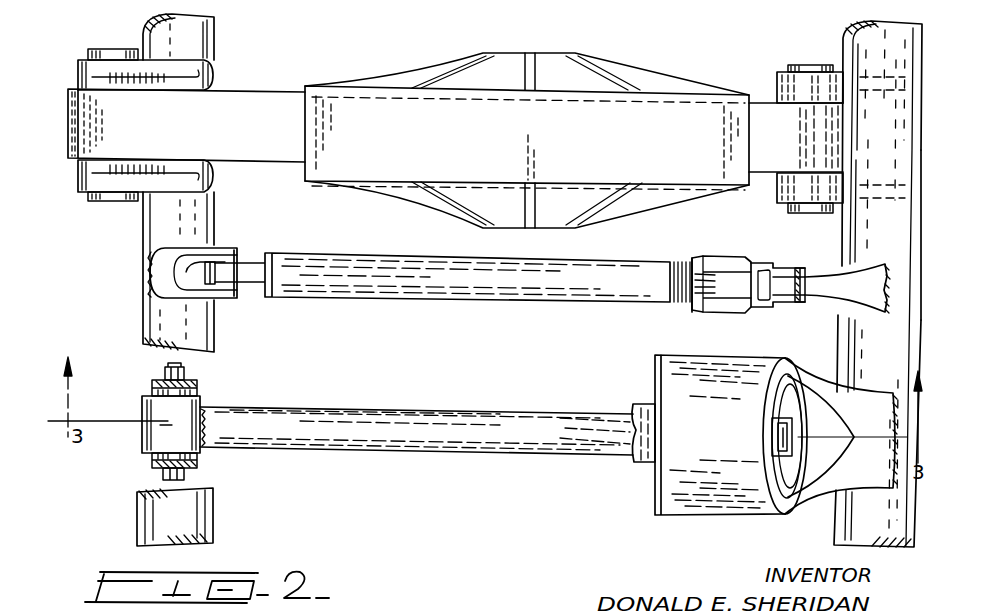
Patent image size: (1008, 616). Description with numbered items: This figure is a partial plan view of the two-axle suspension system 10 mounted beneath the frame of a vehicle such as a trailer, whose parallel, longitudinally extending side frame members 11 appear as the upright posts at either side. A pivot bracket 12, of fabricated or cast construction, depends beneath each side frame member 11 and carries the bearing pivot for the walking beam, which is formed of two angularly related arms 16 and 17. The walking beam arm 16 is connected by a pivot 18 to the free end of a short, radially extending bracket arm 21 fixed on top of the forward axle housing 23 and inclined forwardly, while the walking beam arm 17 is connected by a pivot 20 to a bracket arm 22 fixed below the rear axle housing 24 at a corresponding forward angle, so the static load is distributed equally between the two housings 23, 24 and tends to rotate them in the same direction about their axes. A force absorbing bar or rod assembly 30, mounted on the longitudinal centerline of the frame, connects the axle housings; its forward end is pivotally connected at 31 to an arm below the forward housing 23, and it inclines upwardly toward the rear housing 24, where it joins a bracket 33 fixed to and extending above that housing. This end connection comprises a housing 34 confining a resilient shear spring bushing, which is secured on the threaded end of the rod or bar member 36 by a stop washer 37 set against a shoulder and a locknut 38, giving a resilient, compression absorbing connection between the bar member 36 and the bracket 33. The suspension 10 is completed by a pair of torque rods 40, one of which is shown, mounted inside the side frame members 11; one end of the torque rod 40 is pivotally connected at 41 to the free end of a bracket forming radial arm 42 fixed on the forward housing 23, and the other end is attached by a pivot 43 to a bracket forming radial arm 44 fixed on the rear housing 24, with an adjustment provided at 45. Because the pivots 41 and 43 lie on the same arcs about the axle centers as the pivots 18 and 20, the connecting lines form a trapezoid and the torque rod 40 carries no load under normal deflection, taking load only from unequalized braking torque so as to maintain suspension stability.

The two-axle suspension system 10 is at (524, 424).
The side frame members 11 is at (455, 116).
The pivot bracket 12 is at (667, 84).
The walking beam arm 16 is at (255, 110).
The walking beam arm 17 is at (783, 122).
The pivot 18 is at (112, 49).
The pivot 20 is at (820, 65).
The bracket arm 21 is at (183, 67).
The bracket arm 22 is at (778, 188).
The forward axle housing 23 is at (214, 351).
The rear axle housing 24 is at (840, 508).
The force absorbing bar or rod assembly 30 is at (421, 452).
The pivot point 31 is at (186, 476).
The bracket 33 is at (872, 410).
The housing 34 is at (736, 373).
The rod or bar member 36 is at (586, 447).
The stop washer 37 is at (637, 464).
The locknut 38 is at (784, 423).
The torque rod 40 is at (452, 298).
The pivot 41 is at (227, 302).
The bracket forming radial arm 42 is at (190, 253).
The pivot 43 is at (787, 308).
The bracket forming radial arm 44 is at (821, 285).
The adjustment connection 45 is at (692, 262).